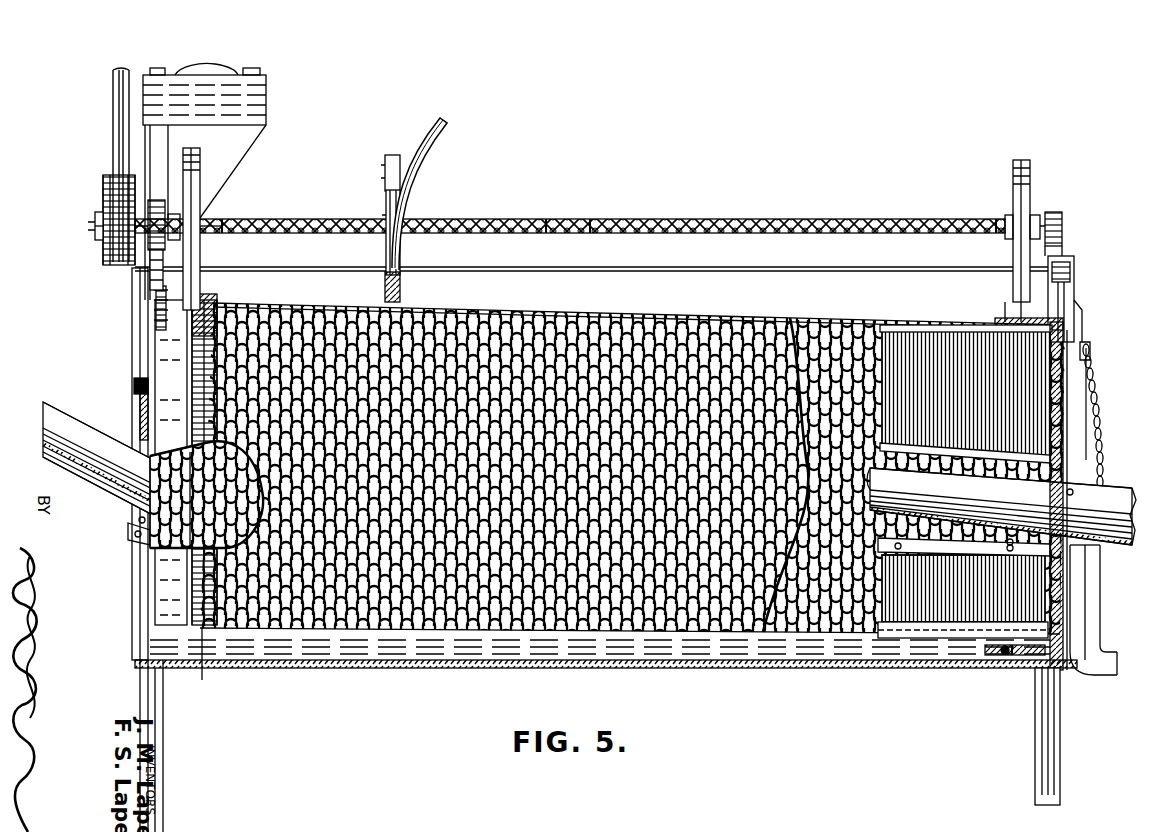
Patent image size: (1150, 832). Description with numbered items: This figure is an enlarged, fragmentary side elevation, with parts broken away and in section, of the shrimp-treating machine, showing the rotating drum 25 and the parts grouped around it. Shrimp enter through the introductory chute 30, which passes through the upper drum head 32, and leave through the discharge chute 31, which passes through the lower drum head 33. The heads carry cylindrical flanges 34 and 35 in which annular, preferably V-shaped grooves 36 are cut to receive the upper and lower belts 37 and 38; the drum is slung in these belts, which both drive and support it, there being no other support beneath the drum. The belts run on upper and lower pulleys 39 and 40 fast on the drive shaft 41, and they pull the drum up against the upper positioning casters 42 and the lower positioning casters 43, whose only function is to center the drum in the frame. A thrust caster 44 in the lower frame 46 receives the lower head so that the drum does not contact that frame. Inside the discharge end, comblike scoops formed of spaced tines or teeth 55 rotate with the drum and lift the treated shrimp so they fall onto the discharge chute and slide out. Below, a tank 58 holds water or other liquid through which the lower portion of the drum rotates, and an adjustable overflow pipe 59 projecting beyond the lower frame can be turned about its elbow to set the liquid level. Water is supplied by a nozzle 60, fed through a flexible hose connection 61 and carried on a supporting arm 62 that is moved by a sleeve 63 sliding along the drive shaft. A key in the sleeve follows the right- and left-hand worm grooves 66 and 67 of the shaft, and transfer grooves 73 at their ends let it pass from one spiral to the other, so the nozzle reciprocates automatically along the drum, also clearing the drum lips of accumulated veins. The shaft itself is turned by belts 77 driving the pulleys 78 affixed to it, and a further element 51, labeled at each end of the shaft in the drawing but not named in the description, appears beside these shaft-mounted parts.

The drum 25 is at (703, 632).
The introductory chute 30 is at (77, 422).
The discharge chute 31 is at (1132, 480).
The upper drum head 32 is at (148, 410).
The lower drum head 33 is at (1063, 624).
The cylindrical flange 34 is at (204, 663).
The cylindrical flange 35 is at (988, 655).
The grooves 36 is at (1015, 655).
The upper belt 37 is at (200, 300).
The lower belt 38 is at (1010, 318).
The upper pulley 39 is at (200, 193).
The lower pulley 40 is at (1030, 192).
The drive shaft 41 is at (640, 220).
The upper positioning casters 42 is at (156, 312).
The lower positioning casters 43 is at (1062, 302).
The thrust caster 44 is at (1078, 352).
The lower frame 46 is at (1050, 720).
The sprocket 51 is at (168, 188).
The tines or teeth 55 is at (908, 334).
The tank 58 is at (836, 665).
The adjustable overflow pipe 59 is at (1106, 626).
The nozzle 60 is at (400, 292).
The flexible hose connection 61 is at (445, 118).
The supporting arm 62 is at (392, 155).
The sleeve 63 is at (400, 218).
The worm groove 66 is at (546, 219).
The worm groove 67 is at (590, 219).
The transfer grooves 73 is at (215, 233).
The belts 77 is at (113, 118).
The pulleys 78 is at (103, 187).